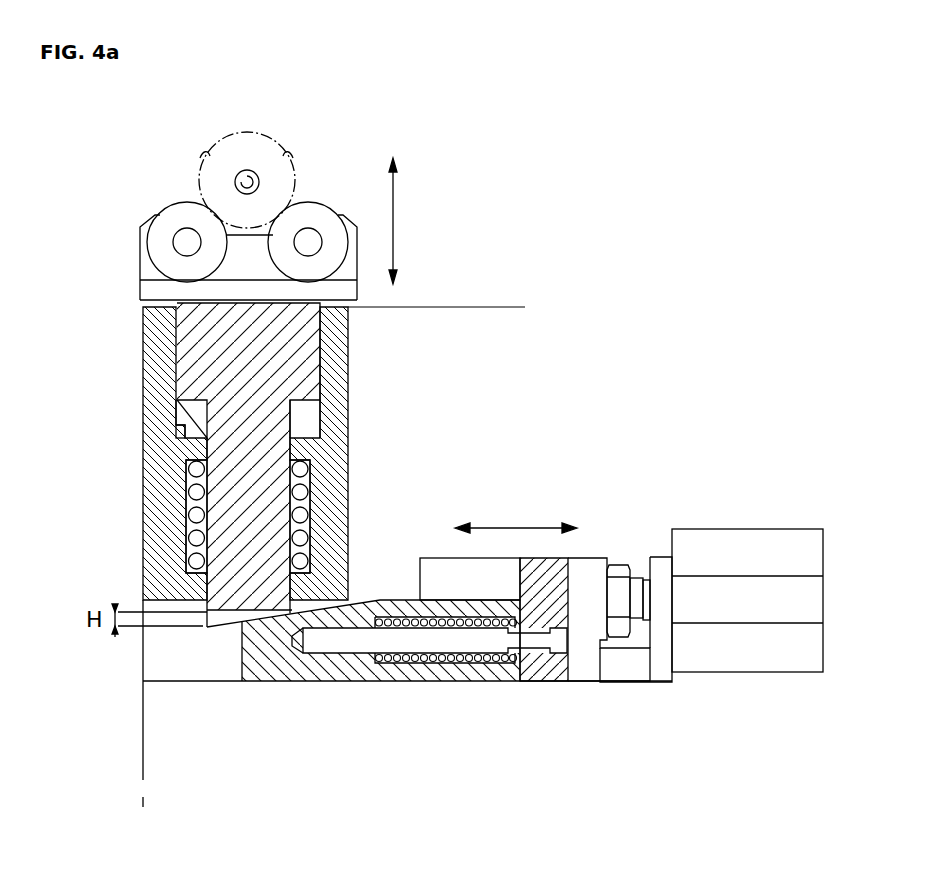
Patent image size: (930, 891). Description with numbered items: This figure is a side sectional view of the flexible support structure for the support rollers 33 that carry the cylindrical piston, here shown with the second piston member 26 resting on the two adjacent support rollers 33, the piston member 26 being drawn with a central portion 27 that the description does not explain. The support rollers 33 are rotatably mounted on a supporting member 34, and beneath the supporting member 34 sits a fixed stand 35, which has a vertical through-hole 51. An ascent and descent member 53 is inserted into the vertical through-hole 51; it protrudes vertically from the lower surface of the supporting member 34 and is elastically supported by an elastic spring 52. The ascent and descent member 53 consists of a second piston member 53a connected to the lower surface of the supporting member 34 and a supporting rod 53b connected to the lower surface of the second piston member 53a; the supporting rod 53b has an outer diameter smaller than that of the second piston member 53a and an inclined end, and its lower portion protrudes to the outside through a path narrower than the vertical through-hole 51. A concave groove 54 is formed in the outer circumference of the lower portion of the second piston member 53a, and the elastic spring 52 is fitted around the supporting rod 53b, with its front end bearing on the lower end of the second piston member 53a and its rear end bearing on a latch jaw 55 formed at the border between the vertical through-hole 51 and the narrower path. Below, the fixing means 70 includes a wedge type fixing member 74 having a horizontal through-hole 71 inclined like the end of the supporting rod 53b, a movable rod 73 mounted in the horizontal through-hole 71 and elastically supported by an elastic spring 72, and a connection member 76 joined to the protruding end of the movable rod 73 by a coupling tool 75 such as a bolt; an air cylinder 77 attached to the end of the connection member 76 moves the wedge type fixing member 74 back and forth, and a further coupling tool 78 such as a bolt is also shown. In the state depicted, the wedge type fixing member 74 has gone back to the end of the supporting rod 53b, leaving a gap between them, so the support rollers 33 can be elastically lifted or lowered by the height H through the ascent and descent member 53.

The second piston member 26 is at (263, 147).
The core of roll 27 is at (247, 178).
The support rollers 33 is at (324, 212).
The supporting member 34 is at (245, 255).
The fixed stand 35 is at (156, 372).
The vertical through-hole 51 is at (195, 518).
The elastic spring 52 is at (195, 537).
The ascent and descent member 53 is at (330, 465).
The second piston member 53a is at (303, 352).
The supporting rod 53b is at (265, 505).
The concave groove 54 is at (190, 406).
The latch jaw 55 is at (178, 424).
The fixing means 70 is at (414, 543).
The horizontal through-hole 71 is at (291, 652).
The elastic spring 72 is at (442, 664).
The movable rod 73 is at (327, 640).
The wedge type fixing member 74 is at (360, 680).
The coupling tool 75 is at (541, 655).
The connection member 76 is at (553, 672).
The air cylinder 77 is at (634, 580).
The coupling tool 78 is at (621, 632).